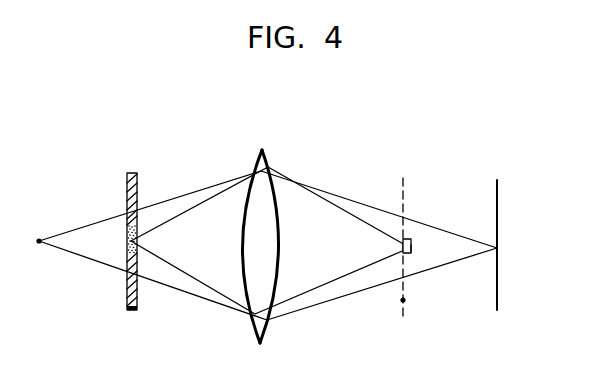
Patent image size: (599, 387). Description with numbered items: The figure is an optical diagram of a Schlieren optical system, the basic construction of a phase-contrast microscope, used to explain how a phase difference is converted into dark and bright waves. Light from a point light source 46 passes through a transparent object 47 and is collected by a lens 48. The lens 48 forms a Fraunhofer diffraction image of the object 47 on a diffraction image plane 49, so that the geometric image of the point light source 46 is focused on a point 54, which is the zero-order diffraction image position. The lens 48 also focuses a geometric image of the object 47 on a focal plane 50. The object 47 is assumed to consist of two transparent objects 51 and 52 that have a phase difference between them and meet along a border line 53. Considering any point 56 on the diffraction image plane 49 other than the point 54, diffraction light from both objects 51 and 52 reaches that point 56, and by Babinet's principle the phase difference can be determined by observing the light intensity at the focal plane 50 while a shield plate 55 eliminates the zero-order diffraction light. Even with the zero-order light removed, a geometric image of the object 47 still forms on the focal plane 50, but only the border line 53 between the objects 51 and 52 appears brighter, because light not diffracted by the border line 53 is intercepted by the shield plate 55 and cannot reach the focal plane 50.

The point light source 46 is at (39, 239).
The transparent object 47 is at (131, 172).
The lens 48 is at (261, 149).
The diffraction image plane 49 is at (403, 177).
The focal plane 50 is at (497, 180).
The transparent object 51 is at (127, 242).
The transparent object 52 is at (137, 307).
The border line 53 is at (138, 240).
The point 54 is at (403, 240).
The shield plate 55 is at (412, 248).
The point 56 is at (405, 302).